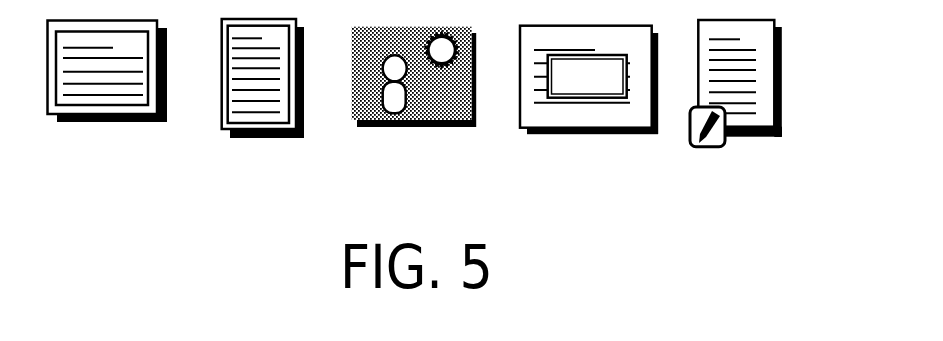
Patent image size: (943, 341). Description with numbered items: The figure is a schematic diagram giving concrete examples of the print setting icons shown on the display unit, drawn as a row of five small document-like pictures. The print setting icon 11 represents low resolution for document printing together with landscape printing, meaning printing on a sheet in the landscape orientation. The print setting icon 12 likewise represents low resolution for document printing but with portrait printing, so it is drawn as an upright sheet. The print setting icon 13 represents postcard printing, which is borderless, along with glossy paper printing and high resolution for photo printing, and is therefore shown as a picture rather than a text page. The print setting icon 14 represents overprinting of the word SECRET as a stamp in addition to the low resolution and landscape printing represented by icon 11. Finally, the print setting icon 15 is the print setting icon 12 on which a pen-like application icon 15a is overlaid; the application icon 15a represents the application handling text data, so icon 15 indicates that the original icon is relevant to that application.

The print setting icon 11 is at (102, 98).
The print setting icon 12 is at (257, 115).
The print setting icon 13 is at (424, 120).
The print setting icon 14 is at (567, 108).
The print setting icon 15 is at (750, 115).
The application icon 15a is at (713, 140).